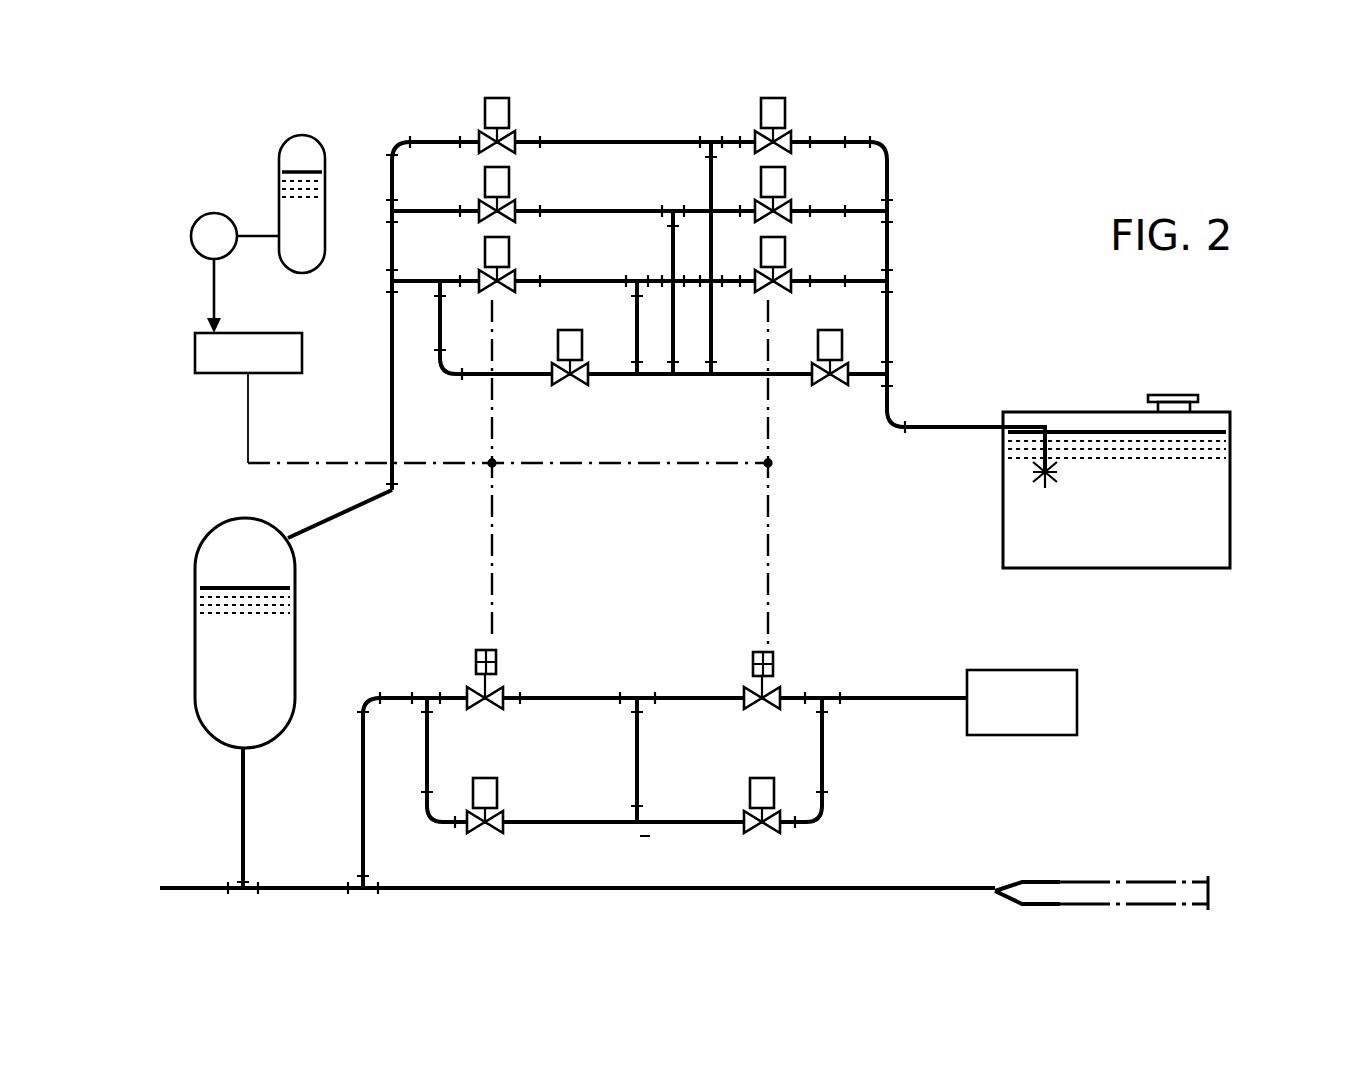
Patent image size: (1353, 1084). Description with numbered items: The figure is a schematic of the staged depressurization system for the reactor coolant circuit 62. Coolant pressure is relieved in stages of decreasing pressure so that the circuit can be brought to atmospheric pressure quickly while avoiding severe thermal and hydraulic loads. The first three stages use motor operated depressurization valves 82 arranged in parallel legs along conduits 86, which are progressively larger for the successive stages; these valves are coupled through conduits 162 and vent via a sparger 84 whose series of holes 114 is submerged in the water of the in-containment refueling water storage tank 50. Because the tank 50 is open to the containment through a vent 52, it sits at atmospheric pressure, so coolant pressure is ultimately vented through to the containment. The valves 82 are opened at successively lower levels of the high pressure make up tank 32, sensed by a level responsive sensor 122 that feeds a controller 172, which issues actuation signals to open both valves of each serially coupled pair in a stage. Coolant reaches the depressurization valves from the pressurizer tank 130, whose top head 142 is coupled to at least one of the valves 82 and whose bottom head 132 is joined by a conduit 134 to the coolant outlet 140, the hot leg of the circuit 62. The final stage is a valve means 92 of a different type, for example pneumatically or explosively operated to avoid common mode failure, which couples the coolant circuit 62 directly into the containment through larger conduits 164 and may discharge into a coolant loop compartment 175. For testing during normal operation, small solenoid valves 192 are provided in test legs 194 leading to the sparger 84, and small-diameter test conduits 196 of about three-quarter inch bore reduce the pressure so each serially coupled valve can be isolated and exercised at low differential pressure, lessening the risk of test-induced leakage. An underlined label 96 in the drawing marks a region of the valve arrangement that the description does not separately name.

The high pressure make up tank 32 is at (281, 186).
The sensor 122 is at (206, 216).
The controller 172 is at (195, 353).
The conduits 162 is at (428, 150).
The conduits 86 is at (562, 142).
The depressurization valves 82 is at (785, 155).
The test conduits 196 is at (440, 330).
The solenoid valves 192 is at (565, 386).
The test legs 194 is at (605, 386).
The valve header 96 is at (905, 544).
The vent 52 is at (1192, 398).
The in-containment refueling water storage tank 50 is at (1232, 481).
The holes 114 is at (1052, 470).
The sparger 84 is at (1050, 500).
The top head 142 is at (230, 530).
The pressurizer tank 130 is at (272, 640).
The bottom head 132 is at (247, 760).
The conduit 134 is at (246, 846).
The coolant outlet 140 is at (202, 884).
The conduits 164 is at (470, 688).
The valve means 92 is at (815, 645).
The coolant loop compartment 175 is at (1030, 670).
The coolant circuit 62 is at (1140, 882).